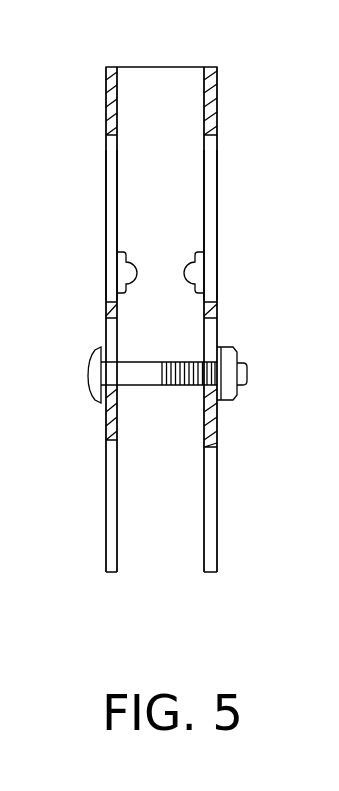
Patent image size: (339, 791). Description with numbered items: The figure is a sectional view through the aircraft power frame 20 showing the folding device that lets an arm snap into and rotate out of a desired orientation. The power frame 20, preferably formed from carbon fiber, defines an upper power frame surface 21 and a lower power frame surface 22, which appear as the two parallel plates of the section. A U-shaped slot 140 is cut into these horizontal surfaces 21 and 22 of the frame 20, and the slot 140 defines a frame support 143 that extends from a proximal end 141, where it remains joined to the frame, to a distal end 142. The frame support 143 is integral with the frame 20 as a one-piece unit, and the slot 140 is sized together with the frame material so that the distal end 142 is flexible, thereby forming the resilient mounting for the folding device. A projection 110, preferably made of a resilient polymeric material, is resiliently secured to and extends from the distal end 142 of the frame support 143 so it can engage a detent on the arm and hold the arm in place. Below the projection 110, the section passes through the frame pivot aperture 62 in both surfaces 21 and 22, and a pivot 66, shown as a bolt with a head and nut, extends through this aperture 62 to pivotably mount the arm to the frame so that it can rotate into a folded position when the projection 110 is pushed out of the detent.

The power frame 20 is at (217, 67).
The upper power frame surface 21 is at (106, 103).
The lower power frame surface 22 is at (217, 90).
The U-shaped slot 140 is at (106, 200).
The proximal end 141 is at (106, 136).
The distal end 142 is at (106, 315).
The frame support 143 is at (106, 233).
The projection 110 is at (124, 272).
The frame pivot aperture 62 is at (106, 400).
The pivot 66 is at (153, 380).